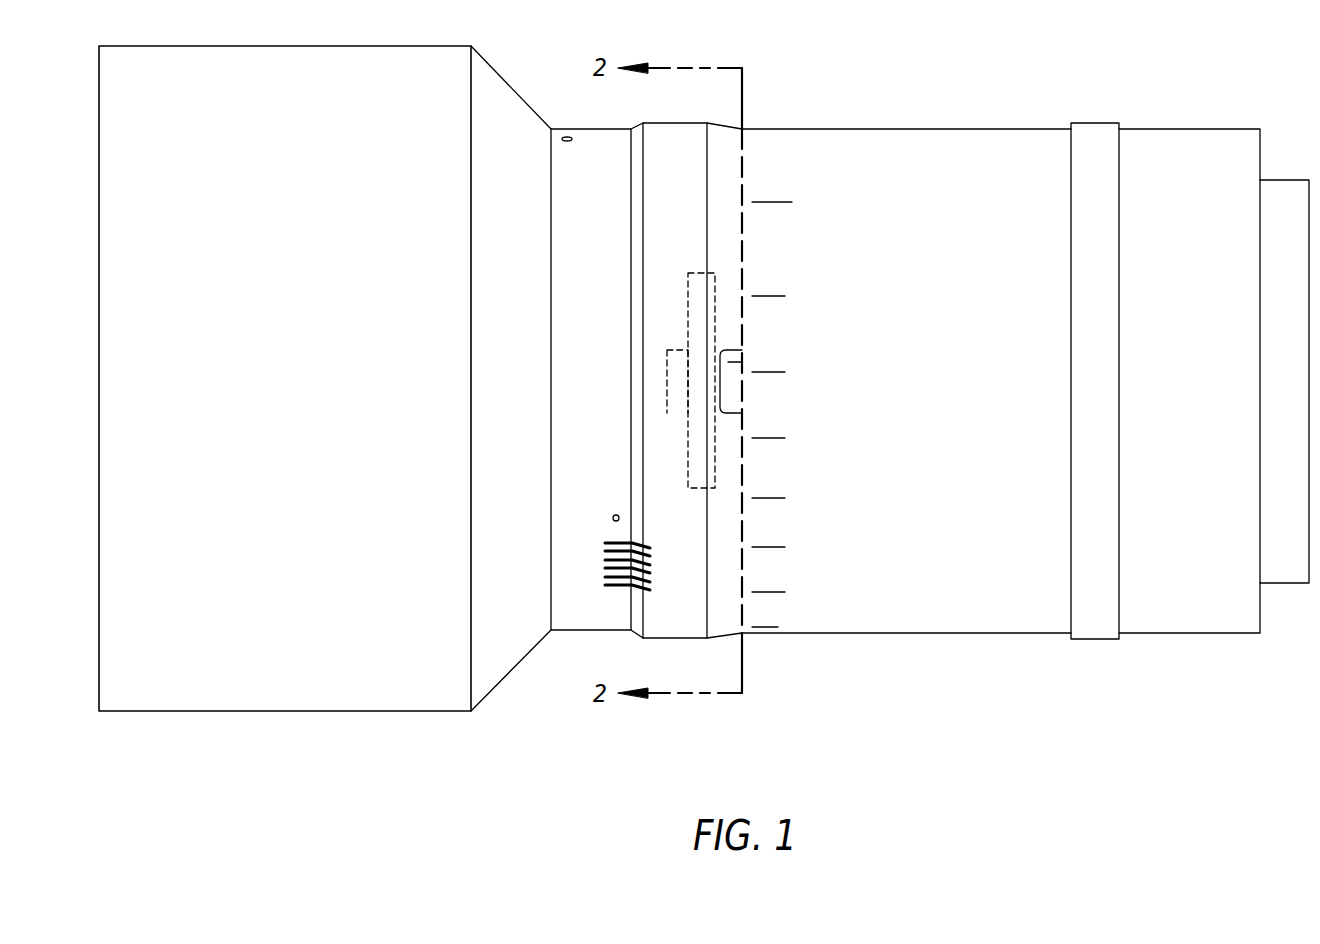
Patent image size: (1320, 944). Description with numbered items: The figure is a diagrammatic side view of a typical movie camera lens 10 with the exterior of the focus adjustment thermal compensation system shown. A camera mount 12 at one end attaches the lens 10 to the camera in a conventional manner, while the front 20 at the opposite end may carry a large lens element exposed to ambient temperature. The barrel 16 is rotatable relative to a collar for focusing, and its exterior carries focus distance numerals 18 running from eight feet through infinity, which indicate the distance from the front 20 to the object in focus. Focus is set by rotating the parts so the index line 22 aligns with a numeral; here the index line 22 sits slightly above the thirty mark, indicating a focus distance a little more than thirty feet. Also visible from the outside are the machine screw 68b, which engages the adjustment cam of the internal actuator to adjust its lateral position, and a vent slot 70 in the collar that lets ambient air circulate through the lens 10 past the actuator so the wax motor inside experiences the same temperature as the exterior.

The camera lens 10 is at (832, 43).
The camera mount 12 is at (1285, 583).
The barrel 16 is at (950, 128).
The focus distance numerals 18 is at (780, 208).
The front 20 is at (98, 392).
The index line 22 is at (732, 362).
The machine screw 68b is at (616, 518).
The vent slot 70 is at (607, 572).